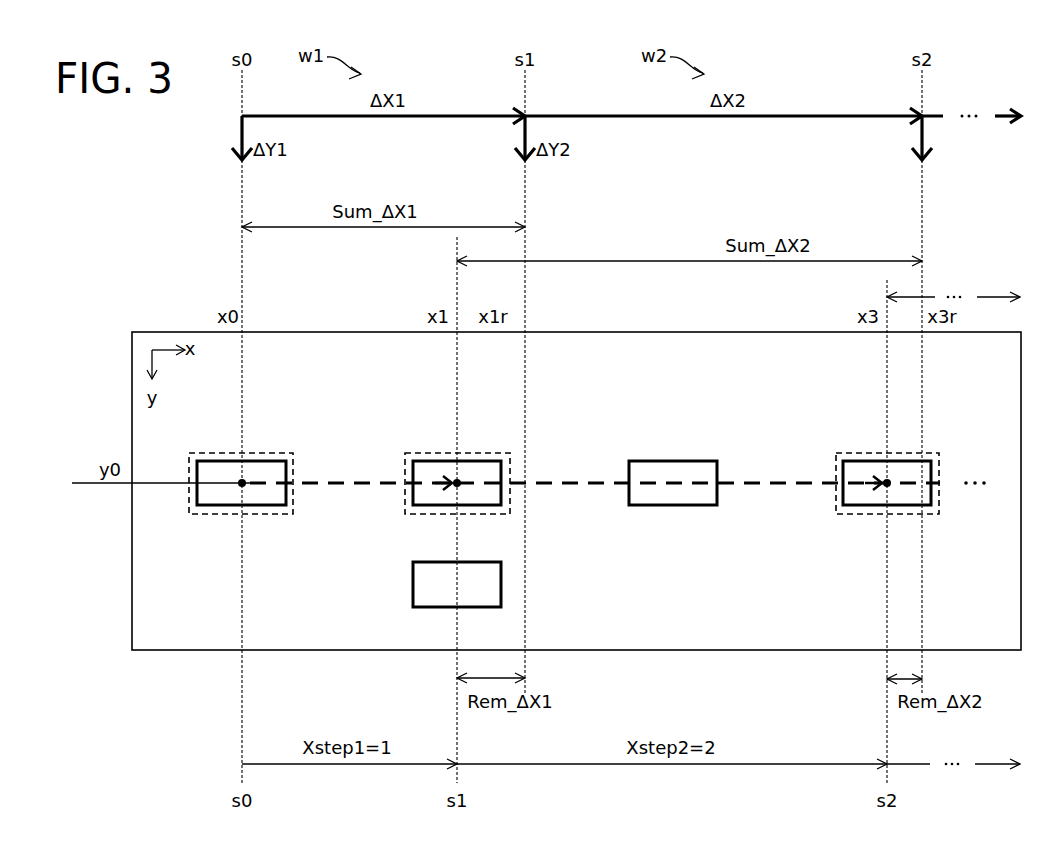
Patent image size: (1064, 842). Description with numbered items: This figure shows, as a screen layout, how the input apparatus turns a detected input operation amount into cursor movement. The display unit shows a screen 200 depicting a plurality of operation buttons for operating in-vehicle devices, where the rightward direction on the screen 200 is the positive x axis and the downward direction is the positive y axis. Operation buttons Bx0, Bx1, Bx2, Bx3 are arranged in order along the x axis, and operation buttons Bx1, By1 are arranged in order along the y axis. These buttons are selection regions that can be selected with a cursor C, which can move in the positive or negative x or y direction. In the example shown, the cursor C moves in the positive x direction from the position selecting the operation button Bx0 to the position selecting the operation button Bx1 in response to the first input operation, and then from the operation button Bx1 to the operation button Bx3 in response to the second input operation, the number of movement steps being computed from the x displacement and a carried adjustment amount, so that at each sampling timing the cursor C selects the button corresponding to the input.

The screen 200 is at (635, 340).
The operation button Bx0 is at (222, 505).
The operation button Bx1 is at (439, 505).
The operation button Bx2 is at (649, 505).
The operation button Bx3 is at (869, 505).
The operation button By1 is at (429, 607).
The cursor C is at (555, 468).